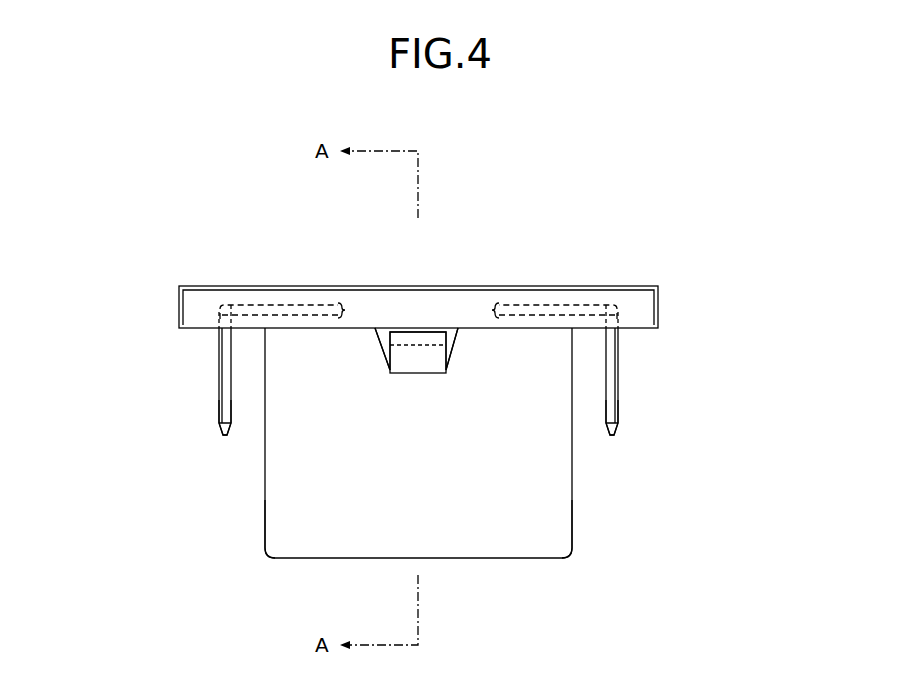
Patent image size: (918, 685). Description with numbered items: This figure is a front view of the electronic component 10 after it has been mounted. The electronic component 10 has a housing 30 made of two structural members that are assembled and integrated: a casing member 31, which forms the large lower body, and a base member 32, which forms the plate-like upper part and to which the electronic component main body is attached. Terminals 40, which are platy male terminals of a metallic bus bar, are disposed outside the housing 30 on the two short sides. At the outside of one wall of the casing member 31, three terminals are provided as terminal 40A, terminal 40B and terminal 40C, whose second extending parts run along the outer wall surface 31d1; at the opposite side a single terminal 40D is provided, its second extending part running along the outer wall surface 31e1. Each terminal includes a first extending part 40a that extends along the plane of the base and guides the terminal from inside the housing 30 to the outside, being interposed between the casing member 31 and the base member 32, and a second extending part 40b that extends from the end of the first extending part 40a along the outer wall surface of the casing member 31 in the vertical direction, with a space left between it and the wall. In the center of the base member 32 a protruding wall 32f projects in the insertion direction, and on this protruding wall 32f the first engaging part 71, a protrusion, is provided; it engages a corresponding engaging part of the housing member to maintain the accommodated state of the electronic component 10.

The electronic component 10 is at (503, 196).
The housing 30 is at (68, 293).
The casing member 31 is at (265, 470).
The outer wall surface of the wall 31d 31d1 is at (573, 527).
The outer wall surface of the wall 31e 31e1 is at (265, 523).
The base member 32 is at (179, 305).
The protruding wall 32f is at (373, 352).
The terminal 40 is at (483, 370).
The terminal 40A is at (738, 370).
The terminal 40B is at (738, 370).
The terminal 40C is at (627, 350).
The terminal 40D is at (207, 350).
The first extending part 40a is at (270, 300).
The second extending part 40b is at (219, 408).
The first engaging part 71 is at (412, 333).